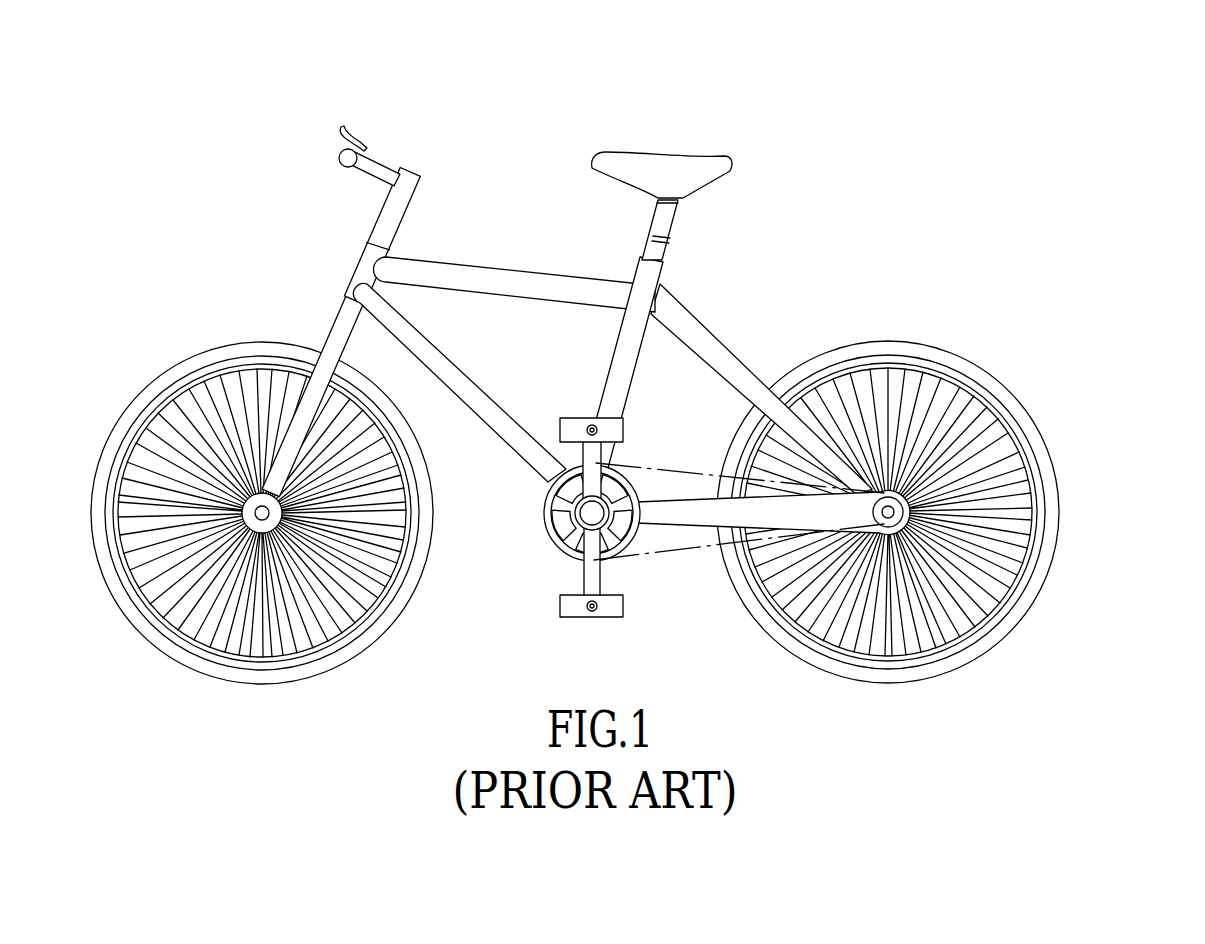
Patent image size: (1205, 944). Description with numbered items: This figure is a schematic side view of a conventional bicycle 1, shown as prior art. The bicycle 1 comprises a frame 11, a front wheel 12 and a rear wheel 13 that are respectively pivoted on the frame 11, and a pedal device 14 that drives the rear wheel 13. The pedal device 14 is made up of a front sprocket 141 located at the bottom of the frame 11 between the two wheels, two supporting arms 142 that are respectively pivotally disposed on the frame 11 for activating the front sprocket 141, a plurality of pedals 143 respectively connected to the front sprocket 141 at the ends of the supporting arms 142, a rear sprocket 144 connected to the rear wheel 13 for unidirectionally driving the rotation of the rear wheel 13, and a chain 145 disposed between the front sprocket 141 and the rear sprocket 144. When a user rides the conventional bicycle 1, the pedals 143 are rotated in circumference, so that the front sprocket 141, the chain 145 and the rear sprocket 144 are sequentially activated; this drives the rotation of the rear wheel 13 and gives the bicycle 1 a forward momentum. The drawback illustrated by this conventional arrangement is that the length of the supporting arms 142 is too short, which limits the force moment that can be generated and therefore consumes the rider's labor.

The conventional bicycle 1 is at (165, 162).
The frame 11 is at (510, 282).
The front wheel 12 is at (215, 363).
The rear wheel 13 is at (967, 375).
The pedal device 14 is at (544, 531).
The front sprocket 141 is at (547, 507).
The supporting arms 142 is at (590, 579).
The pedals 143 is at (577, 610).
The rear sprocket 144 is at (1013, 436).
The chain 145 is at (687, 552).